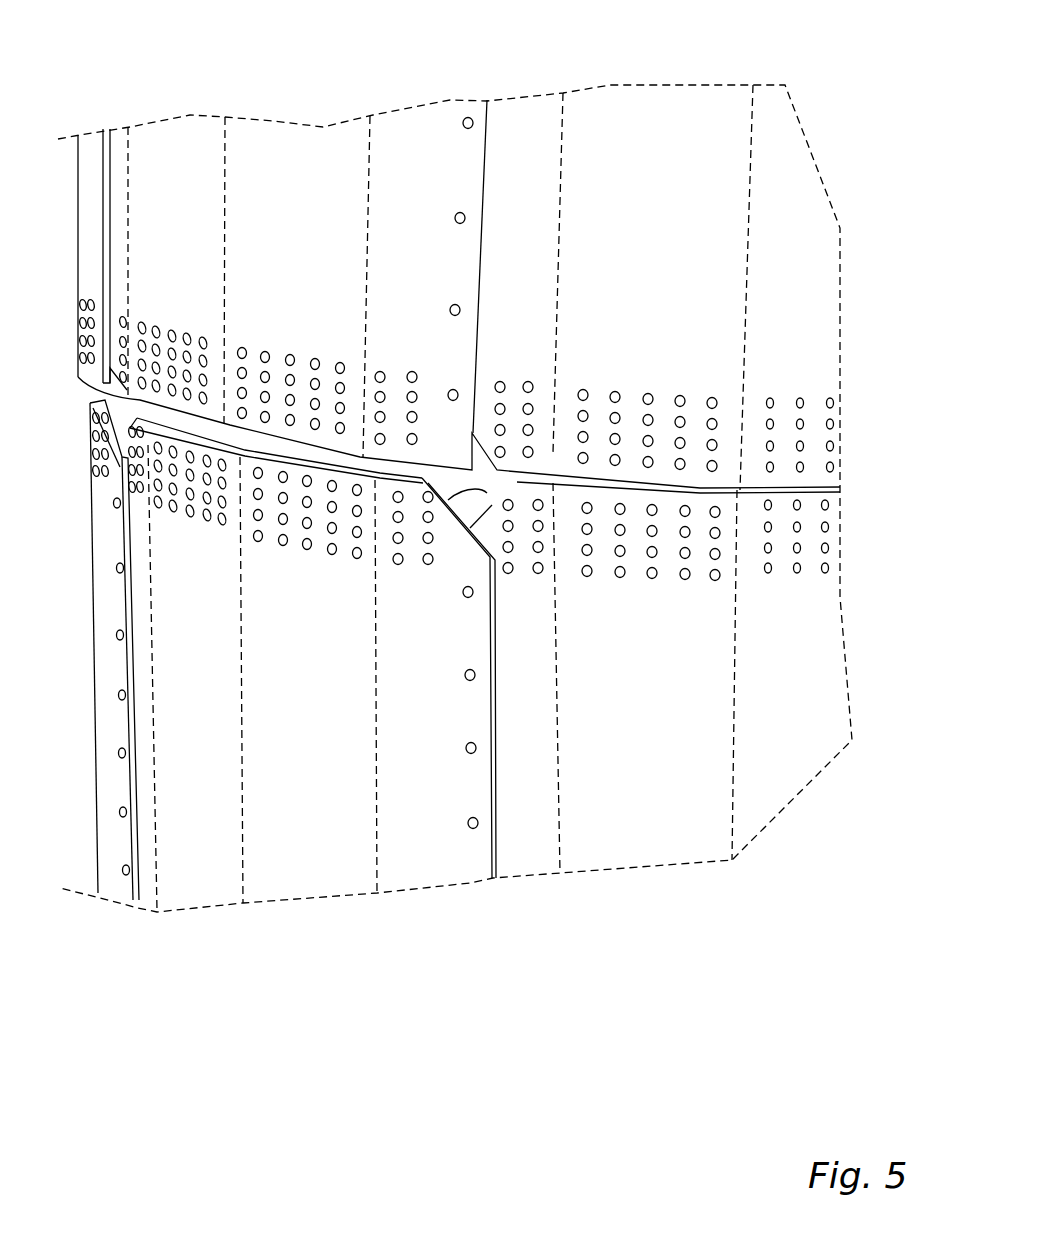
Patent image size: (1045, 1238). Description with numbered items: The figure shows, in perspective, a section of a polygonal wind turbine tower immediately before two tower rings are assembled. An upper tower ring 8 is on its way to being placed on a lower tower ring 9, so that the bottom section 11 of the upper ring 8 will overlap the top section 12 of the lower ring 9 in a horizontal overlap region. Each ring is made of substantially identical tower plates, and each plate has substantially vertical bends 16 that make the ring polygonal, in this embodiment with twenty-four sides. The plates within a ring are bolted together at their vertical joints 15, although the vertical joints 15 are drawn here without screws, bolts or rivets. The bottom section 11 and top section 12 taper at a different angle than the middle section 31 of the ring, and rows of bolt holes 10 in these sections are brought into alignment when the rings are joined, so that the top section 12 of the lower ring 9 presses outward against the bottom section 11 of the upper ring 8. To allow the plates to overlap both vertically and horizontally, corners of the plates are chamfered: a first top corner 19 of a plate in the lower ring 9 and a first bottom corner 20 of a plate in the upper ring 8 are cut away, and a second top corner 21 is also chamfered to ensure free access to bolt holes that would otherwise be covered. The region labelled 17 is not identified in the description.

The upper tower ring 8 is at (187, 218).
The middle section 31 is at (293, 210).
The vertical joints 15 is at (467, 248).
The vertical bends 16 is at (743, 290).
The bottom section 11 is at (177, 360).
The rows of bolt holes 10 is at (240, 393).
The top section 12 is at (243, 492).
The lower tower ring 9 is at (207, 675).
The first bottom corner 20 is at (498, 468).
The first top corner 19 is at (498, 480).
The second top corner 21 is at (448, 500).
The lower central panel 17 is at (475, 793).